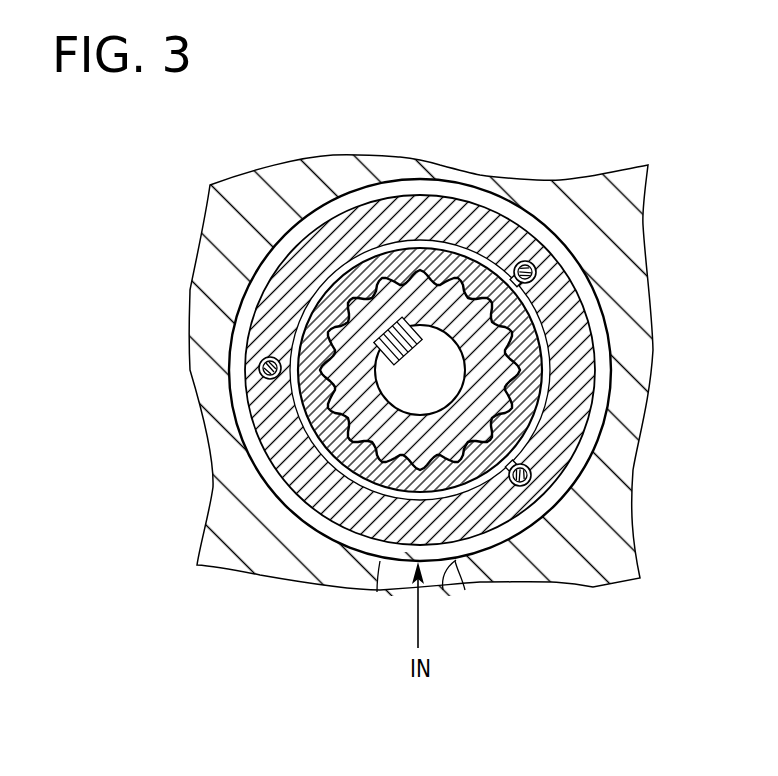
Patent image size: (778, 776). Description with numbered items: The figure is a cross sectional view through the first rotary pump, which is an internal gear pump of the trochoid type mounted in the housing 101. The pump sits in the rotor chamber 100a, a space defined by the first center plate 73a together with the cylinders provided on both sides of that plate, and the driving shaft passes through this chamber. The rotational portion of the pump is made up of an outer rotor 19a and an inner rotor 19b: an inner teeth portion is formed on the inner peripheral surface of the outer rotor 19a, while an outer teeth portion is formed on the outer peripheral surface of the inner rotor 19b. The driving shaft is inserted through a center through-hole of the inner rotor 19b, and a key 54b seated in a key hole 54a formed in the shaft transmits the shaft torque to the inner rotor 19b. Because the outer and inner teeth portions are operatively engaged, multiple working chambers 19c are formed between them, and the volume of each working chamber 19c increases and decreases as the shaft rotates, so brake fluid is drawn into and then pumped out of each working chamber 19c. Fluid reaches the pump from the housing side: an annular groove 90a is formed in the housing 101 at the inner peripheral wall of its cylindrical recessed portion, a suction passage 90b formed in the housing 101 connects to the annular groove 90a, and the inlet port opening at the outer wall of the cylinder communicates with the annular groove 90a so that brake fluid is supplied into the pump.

The housing 101 is at (643, 224).
The key hole 54a is at (410, 326).
The key 54b is at (500, 316).
The first center plate 73a is at (595, 388).
The rotor chamber 100a is at (550, 430).
The outer rotor 19a is at (343, 440).
The inner rotor 19b is at (478, 470).
The working chambers 19c is at (360, 478).
The annular groove 90a is at (550, 565).
The suction passage 90b is at (443, 590).